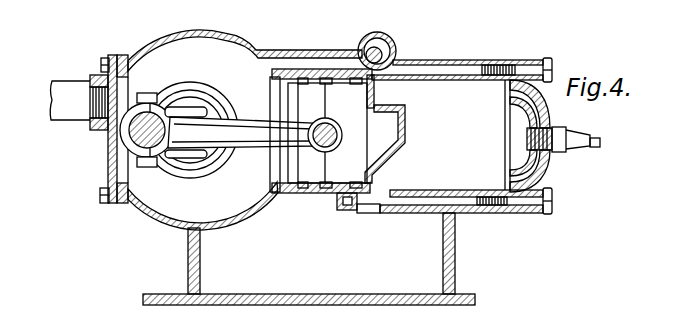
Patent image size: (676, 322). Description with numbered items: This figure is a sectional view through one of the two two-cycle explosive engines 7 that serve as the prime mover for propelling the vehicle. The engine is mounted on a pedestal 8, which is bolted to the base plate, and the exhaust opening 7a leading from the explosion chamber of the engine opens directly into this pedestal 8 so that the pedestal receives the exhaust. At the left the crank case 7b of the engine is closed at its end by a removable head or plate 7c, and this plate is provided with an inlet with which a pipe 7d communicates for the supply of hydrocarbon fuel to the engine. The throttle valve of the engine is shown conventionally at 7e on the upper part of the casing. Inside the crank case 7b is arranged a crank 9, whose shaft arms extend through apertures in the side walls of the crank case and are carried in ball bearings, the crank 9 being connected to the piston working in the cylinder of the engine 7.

The explosive engine 7 is at (328, 50).
The exhaust opening 7a is at (388, 190).
The crank case 7b is at (230, 32).
The removable head or plate 7c is at (107, 153).
The fuel supply pipe 7d is at (60, 50).
The throttle valve 7e is at (397, 47).
The pedestal 8 is at (456, 271).
The crank 9 is at (152, 168).